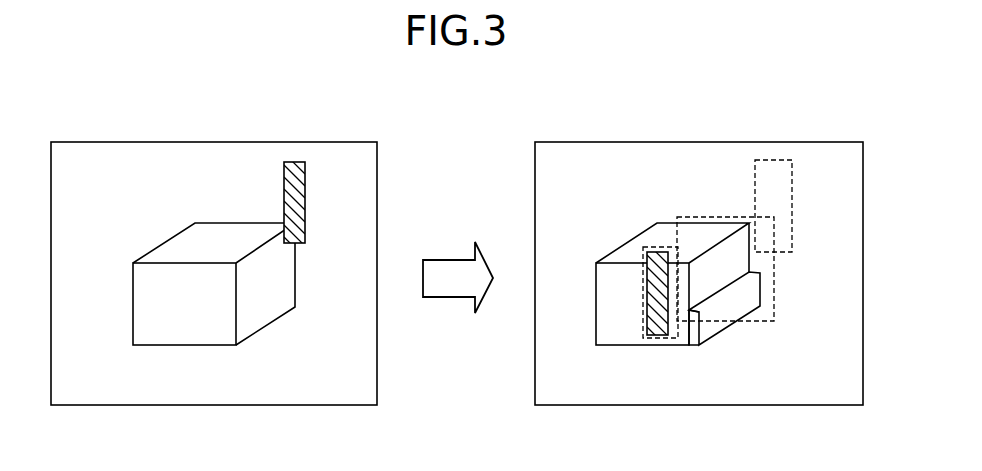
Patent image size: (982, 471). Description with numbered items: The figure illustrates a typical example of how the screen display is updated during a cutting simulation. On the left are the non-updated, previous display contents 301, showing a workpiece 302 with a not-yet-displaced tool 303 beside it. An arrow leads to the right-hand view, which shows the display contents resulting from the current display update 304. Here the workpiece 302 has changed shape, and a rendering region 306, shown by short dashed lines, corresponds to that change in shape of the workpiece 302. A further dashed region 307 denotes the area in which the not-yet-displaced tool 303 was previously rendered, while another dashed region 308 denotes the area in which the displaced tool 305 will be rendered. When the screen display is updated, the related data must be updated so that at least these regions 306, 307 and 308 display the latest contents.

The previous display contents 301 is at (77, 141).
The workpiece 302 is at (215, 222).
The not-yet-displaced tool 303 is at (296, 162).
The display contents resulting from the current display update 304 is at (562, 141).
The displaced tool 305 is at (660, 252).
The rendering region 306 is at (760, 321).
The region of previously rendered tool 307 is at (793, 172).
The region for displaced tool 308 is at (643, 328).